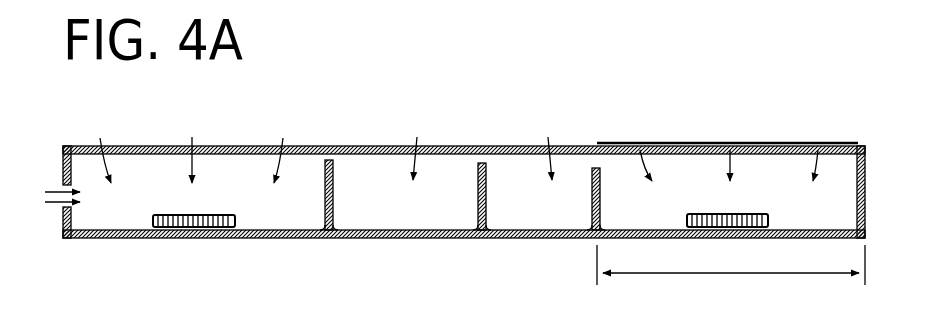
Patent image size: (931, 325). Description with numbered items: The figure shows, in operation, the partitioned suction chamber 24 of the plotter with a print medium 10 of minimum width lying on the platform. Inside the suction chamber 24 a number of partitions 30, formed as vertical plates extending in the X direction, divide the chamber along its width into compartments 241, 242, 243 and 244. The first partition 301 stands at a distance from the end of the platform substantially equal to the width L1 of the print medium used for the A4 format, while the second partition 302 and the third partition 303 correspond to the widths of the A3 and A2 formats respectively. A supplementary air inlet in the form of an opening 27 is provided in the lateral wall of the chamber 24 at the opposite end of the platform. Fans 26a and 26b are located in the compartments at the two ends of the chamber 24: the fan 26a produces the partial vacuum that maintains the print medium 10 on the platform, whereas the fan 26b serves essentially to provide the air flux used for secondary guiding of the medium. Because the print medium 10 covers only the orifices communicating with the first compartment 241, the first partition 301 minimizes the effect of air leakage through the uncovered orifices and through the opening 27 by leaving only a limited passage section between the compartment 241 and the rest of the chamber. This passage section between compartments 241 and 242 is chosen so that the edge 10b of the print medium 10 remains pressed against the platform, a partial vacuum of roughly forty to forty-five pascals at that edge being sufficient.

The print medium 10 is at (755, 141).
The edge of the print medium 10b is at (607, 141).
The opening 27 is at (66, 206).
The partitions 30 is at (446, 224).
The first partition 301 is at (592, 213).
The second partition 302 is at (478, 208).
The third partition 303 is at (325, 208).
The suction chamber 24 is at (459, 176).
The first compartment 241 is at (760, 201).
The second compartment 242 is at (572, 200).
The third compartment 243 is at (440, 200).
The fourth compartment 244 is at (230, 200).
The fan 26a is at (770, 222).
The fan 26b is at (207, 227).
The width of the print medium for A4 format L1 is at (731, 265).